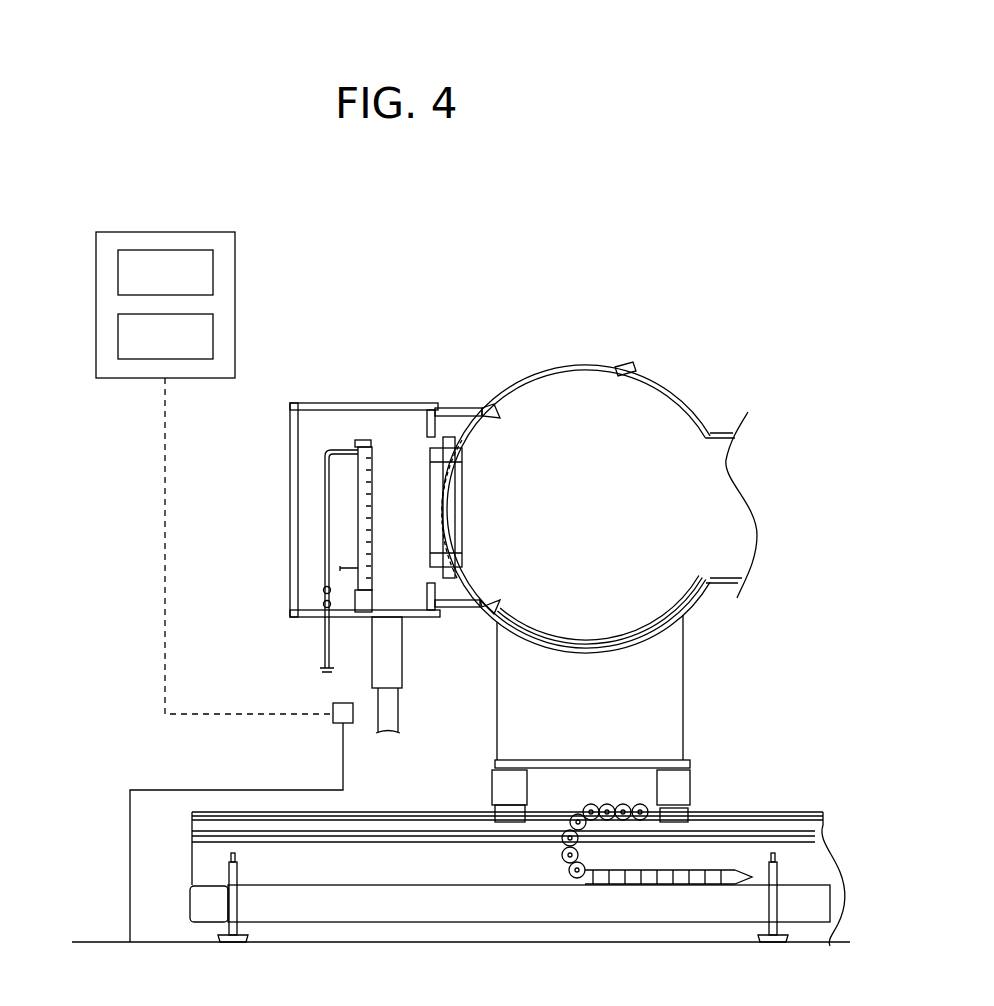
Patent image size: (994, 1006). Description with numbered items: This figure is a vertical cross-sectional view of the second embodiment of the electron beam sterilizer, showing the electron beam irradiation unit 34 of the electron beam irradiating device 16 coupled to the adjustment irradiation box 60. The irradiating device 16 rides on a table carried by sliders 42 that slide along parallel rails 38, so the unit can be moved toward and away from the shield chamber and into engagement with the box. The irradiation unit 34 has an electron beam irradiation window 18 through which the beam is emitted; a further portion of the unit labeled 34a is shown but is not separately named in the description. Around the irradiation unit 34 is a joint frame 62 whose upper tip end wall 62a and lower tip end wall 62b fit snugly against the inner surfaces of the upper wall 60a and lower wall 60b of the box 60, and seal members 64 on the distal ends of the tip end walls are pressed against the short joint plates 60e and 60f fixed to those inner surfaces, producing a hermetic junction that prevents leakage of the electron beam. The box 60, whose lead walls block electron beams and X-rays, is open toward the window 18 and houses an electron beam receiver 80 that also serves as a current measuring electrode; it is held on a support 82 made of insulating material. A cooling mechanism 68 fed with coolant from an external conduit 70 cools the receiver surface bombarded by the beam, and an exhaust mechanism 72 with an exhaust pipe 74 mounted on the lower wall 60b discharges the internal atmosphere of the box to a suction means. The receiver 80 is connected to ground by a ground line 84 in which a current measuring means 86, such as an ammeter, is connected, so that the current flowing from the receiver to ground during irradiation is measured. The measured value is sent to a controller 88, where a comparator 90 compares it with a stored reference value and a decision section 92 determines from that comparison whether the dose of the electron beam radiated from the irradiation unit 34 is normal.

The electron beam irradiating device 16 is at (708, 618).
The electron beam irradiation window 18 is at (430, 500).
The electron beam irradiation unit 34 is at (665, 408).
The ring inner surface 34a is at (455, 545).
The rails 38 is at (740, 812).
The sliders 42 is at (495, 797).
The adjustment irradiation box 60 is at (368, 504).
The upper wall 60a is at (394, 403).
The lower wall 60b is at (413, 618).
The joint plate 60e is at (426, 422).
The joint plate 60f is at (426, 600).
The joint frame 62 is at (479, 496).
The upper tip end wall 62a is at (458, 408).
The lower tip end wall 62b is at (460, 608).
The seal members 64 is at (478, 428).
The cooling mechanism 68 is at (372, 525).
The external conduit 70 is at (325, 628).
The exhaust mechanism 72 is at (410, 730).
The exhaust pipe 74 is at (380, 612).
The electron beam receiver 80 is at (325, 470).
The support 82 is at (360, 597).
The ground line 84 is at (129, 830).
The current measuring means 86 is at (333, 716).
The controller 88 is at (218, 232).
The comparator 90 is at (200, 277).
The decision section 92 is at (198, 338).